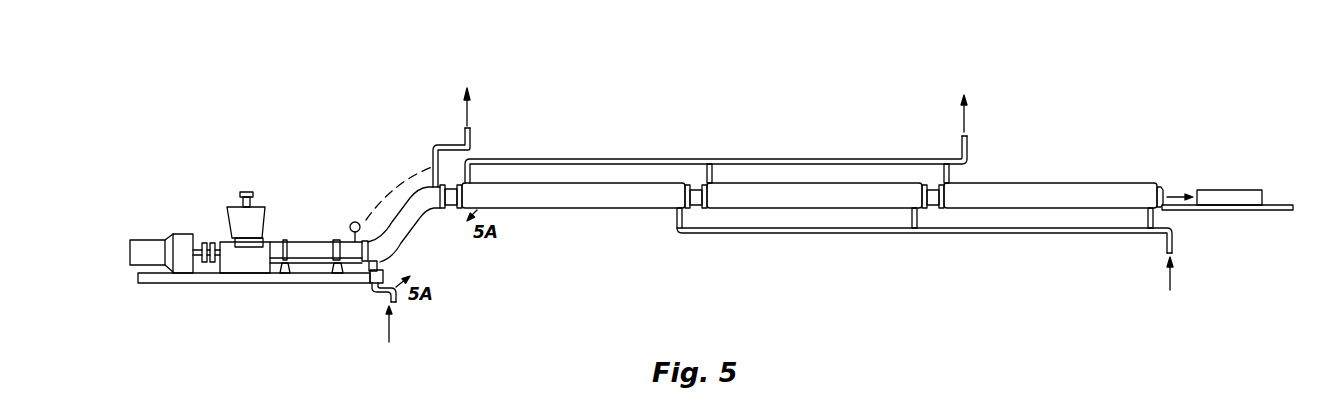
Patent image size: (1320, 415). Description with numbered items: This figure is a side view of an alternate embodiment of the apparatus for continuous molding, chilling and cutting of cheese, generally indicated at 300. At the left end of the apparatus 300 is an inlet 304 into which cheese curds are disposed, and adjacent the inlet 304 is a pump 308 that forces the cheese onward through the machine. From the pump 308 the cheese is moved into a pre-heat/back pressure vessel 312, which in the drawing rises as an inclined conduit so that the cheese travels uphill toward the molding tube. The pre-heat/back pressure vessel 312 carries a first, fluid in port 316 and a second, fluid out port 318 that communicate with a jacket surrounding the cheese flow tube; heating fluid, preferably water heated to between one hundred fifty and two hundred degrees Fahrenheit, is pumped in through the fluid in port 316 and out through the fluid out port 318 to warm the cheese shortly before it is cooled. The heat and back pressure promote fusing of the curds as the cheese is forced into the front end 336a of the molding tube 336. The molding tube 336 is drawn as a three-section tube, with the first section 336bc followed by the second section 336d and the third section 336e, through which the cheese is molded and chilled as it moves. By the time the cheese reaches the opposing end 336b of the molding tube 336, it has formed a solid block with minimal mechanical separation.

The apparatus for continuous molding/chilling/cutting of cheese 300 is at (304, 126).
The inlet 304 is at (245, 232).
The pump 308 is at (263, 263).
The pre-heat/back pressure vessel 312 is at (425, 220).
The fluid in port 316 is at (393, 302).
The fluid out port 318 is at (470, 147).
The molding tube 336 is at (744, 112).
The front end of the molding tube 336a is at (456, 186).
The opposing end of the molding tube 336b is at (1161, 187).
The first tube section 336bc is at (597, 182).
The second section of the molding tube 336d is at (808, 182).
The third section of the molding tube 336e is at (1035, 182).